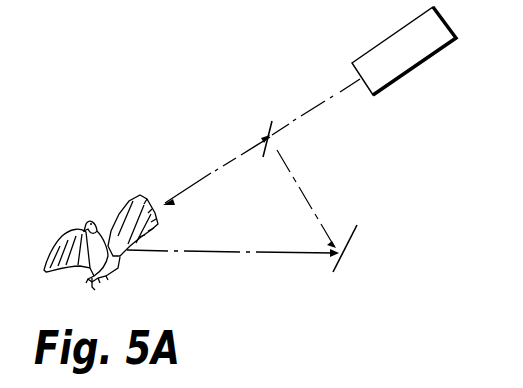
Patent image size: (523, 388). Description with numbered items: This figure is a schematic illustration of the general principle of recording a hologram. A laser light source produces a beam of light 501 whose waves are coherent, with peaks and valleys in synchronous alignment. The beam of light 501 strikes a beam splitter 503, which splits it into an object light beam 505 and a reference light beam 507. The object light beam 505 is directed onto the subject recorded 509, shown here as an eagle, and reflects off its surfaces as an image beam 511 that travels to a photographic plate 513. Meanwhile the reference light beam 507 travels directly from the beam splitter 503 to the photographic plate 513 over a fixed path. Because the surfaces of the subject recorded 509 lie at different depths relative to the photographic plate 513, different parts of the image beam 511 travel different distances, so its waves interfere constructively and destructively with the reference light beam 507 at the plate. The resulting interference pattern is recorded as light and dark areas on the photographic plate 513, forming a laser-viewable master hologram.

The beam of light 501 is at (327, 101).
The beam splitter 503 is at (266, 150).
The object light beam 505 is at (203, 178).
The reference light beam 507 is at (312, 198).
The subject recorded 509 is at (93, 287).
The image beam 511 is at (270, 254).
The photographic plate 513 is at (353, 232).